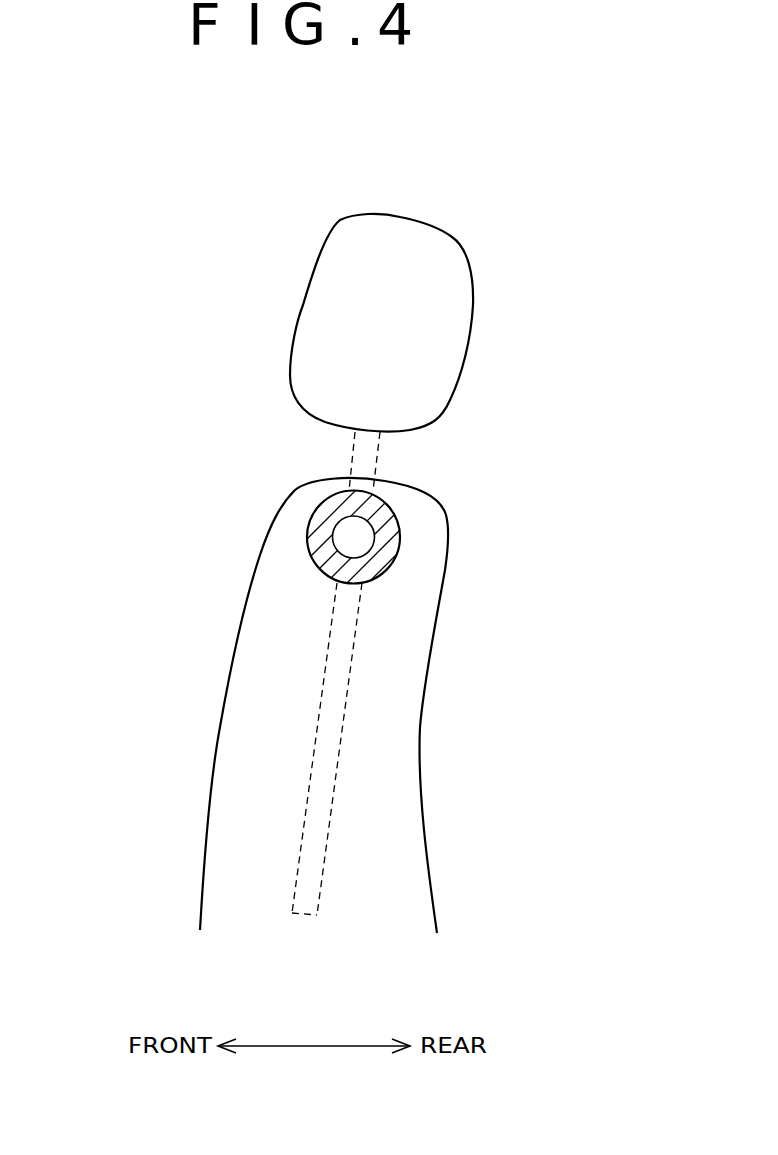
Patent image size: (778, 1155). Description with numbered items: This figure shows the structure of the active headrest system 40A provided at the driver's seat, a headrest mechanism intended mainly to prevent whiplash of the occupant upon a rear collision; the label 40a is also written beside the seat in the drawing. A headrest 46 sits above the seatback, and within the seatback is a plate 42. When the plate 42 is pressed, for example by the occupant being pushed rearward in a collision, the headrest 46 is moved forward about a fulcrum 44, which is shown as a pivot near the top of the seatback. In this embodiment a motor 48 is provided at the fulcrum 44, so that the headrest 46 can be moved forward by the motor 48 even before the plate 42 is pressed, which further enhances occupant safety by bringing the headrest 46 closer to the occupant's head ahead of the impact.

The active headrest system 40A is at (188, 221).
The seat back side portion 40a is at (324, 705).
The plate 42 is at (447, 247).
The fulcrum 44 is at (325, 750).
The headrest 46 is at (362, 530).
The motor 48 is at (318, 518).